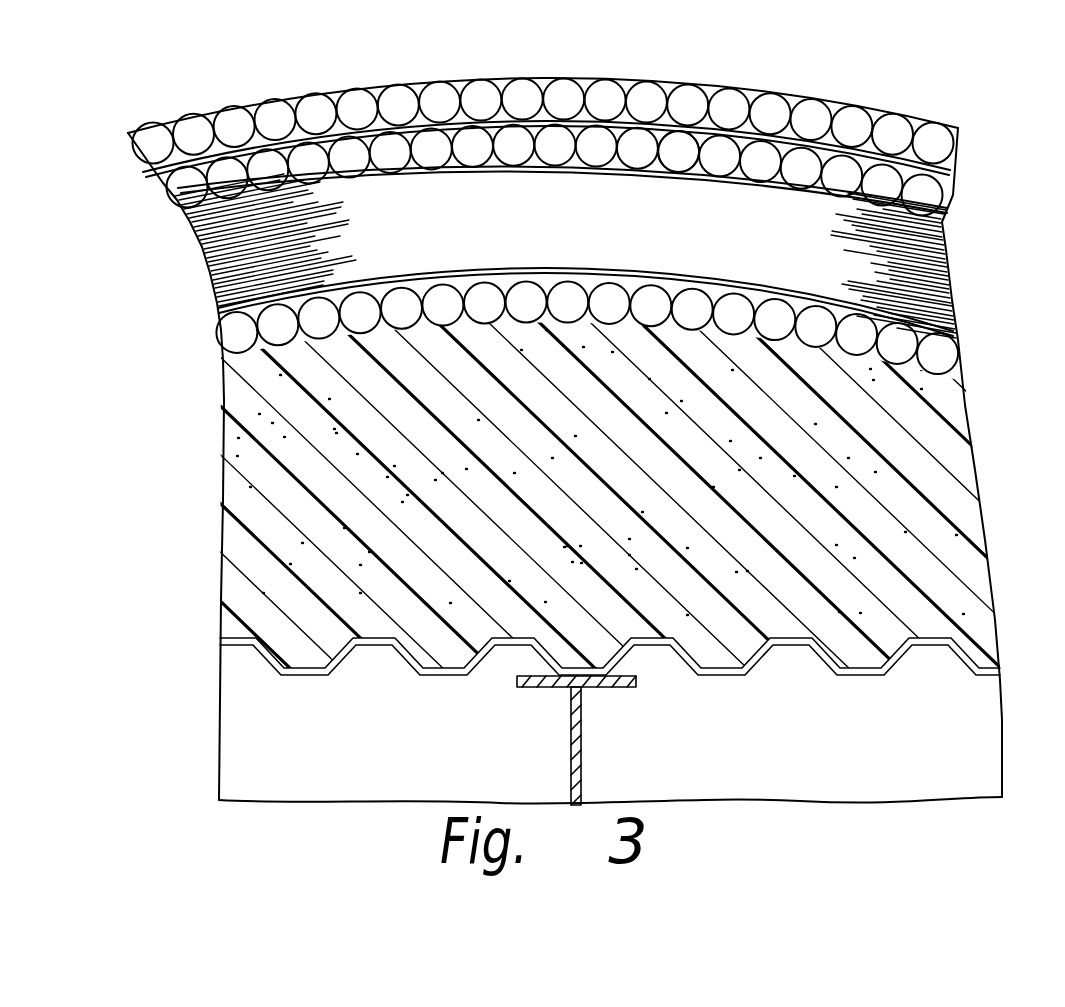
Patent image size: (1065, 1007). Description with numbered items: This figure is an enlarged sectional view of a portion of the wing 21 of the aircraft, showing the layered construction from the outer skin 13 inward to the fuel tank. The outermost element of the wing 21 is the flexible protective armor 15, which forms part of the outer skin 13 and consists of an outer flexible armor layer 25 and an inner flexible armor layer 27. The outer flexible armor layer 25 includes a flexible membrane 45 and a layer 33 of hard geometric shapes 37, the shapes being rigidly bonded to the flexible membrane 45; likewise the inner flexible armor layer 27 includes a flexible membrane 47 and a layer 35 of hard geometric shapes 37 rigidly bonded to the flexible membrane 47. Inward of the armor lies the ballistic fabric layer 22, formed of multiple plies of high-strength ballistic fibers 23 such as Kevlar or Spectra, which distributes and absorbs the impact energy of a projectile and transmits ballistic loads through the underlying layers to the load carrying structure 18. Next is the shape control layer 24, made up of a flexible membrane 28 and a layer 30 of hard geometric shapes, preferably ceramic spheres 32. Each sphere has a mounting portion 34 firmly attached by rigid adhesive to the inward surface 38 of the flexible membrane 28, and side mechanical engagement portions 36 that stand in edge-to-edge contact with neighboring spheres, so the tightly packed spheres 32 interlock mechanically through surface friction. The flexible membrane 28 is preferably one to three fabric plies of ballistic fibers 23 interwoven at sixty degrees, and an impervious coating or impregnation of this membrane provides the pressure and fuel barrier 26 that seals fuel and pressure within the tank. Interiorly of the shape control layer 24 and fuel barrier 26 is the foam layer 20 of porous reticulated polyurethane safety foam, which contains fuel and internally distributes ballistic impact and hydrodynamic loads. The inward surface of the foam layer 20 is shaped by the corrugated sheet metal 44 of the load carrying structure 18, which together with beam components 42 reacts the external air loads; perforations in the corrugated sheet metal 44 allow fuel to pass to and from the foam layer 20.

The outer skin 13 is at (797, 95).
The flexible protective armor 15 is at (962, 173).
The load carrying structure 18 is at (995, 685).
The foam layer 20 is at (965, 480).
The wing 21 is at (977, 403).
The ballistic fabric layer 22 is at (955, 258).
The ballistic fibers 23 is at (952, 301).
The shape control layer 24 is at (210, 323).
The outer flexible armor layer 25 is at (126, 164).
The pressure and fuel barrier 26 is at (223, 310).
The inner flexible armor layer 27 is at (158, 205).
The flexible membrane 28 is at (257, 297).
The layer of hard geometric shapes 30 is at (235, 338).
The ceramic spheres 32 is at (945, 350).
The layer of hard geometric shapes 33 is at (343, 100).
The mounting portions 34 is at (533, 273).
The layer of hard geometric shapes 35 is at (678, 163).
The side mechanical engagement portions 36 is at (593, 297).
The hard geometric shapes 37 is at (600, 98).
The inward surface 38 is at (720, 300).
The beam components 42 is at (584, 735).
The corrugated sheet metal 44 is at (965, 657).
The flexible membrane 45 is at (507, 118).
The flexible membrane 47 is at (557, 170).